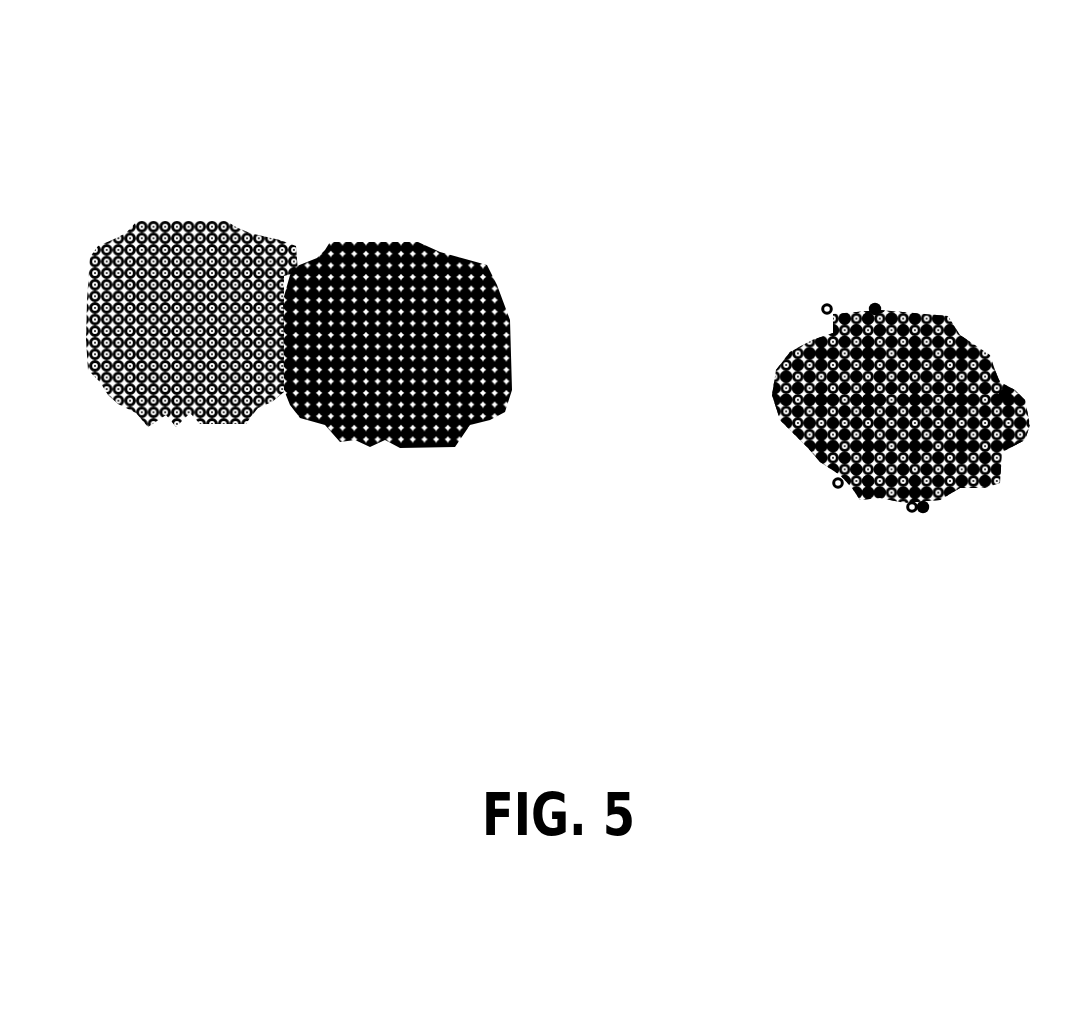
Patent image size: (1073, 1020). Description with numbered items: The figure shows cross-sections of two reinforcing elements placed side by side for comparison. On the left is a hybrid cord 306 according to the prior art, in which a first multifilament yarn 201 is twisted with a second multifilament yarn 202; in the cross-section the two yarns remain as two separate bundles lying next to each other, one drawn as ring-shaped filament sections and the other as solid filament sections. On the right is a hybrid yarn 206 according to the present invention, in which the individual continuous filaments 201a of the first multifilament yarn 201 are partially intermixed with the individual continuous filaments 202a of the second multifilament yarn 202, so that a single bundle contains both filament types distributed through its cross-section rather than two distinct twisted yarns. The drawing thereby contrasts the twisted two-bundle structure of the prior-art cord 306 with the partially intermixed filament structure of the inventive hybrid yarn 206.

The hybrid cord 306 is at (287, 349).
The first multifilament yarn 201 is at (191, 442).
The second multifilament yarn 202 is at (397, 461).
The hybrid yarn 206 is at (912, 397).
The individual continuous filaments of the first multifilament yarn 201a is at (891, 506).
The individual continuous filaments of the second multifilament yarn 202a is at (921, 511).